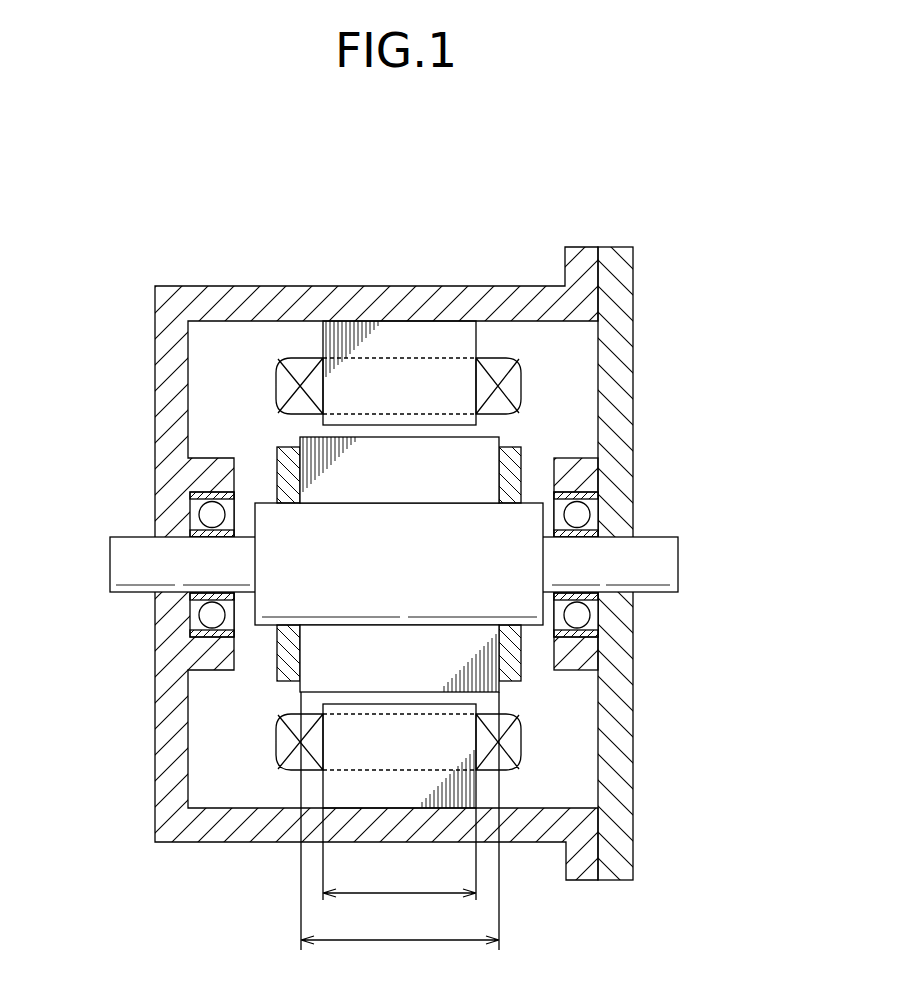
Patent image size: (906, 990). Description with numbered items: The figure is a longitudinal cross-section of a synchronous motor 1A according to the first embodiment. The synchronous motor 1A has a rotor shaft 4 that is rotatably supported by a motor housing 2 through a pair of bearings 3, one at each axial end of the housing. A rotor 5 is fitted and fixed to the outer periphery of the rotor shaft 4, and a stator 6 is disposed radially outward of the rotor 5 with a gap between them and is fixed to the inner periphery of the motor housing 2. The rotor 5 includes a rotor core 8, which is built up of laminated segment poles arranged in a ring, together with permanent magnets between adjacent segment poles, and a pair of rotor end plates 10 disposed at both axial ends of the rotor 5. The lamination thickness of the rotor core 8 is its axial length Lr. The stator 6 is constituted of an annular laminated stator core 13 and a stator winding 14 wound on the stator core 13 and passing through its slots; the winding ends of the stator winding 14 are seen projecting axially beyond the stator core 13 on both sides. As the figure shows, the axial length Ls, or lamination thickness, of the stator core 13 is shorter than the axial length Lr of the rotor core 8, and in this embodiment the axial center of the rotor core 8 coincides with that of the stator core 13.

The synchronous motor 1A is at (607, 175).
The motor housing 2 is at (228, 295).
The bearings 3 is at (210, 614).
The rotor shaft 4 is at (658, 545).
The rotor 5 is at (522, 423).
The stator 6 is at (398, 487).
The rotor core 8 is at (442, 455).
The rotor end plates 10 is at (517, 457).
The stator core 13 is at (368, 345).
The stator winding 14 is at (302, 372).